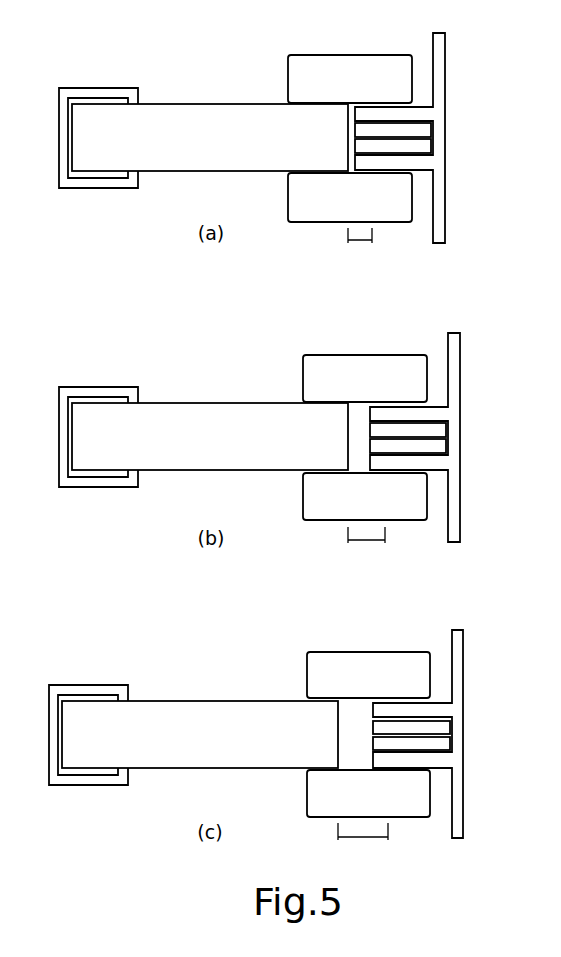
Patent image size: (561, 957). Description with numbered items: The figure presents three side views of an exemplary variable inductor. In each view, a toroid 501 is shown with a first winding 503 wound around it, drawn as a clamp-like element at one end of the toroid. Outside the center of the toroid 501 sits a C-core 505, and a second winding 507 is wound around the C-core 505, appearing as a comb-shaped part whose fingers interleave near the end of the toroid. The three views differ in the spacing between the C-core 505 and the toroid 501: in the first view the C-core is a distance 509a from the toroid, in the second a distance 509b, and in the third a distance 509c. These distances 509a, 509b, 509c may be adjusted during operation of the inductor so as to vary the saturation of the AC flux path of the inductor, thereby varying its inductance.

The toroid 501 is at (212, 104).
The first winding 503 is at (100, 88).
The C-core 505 is at (316, 55).
The second winding 507 is at (445, 55).
The distance 509a is at (360, 243).
The distance 509b is at (366, 543).
The distance 509c is at (366, 840).